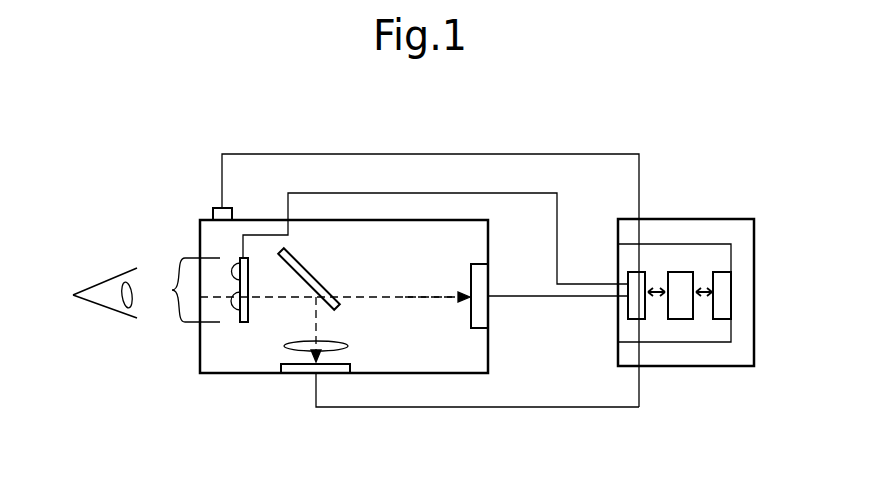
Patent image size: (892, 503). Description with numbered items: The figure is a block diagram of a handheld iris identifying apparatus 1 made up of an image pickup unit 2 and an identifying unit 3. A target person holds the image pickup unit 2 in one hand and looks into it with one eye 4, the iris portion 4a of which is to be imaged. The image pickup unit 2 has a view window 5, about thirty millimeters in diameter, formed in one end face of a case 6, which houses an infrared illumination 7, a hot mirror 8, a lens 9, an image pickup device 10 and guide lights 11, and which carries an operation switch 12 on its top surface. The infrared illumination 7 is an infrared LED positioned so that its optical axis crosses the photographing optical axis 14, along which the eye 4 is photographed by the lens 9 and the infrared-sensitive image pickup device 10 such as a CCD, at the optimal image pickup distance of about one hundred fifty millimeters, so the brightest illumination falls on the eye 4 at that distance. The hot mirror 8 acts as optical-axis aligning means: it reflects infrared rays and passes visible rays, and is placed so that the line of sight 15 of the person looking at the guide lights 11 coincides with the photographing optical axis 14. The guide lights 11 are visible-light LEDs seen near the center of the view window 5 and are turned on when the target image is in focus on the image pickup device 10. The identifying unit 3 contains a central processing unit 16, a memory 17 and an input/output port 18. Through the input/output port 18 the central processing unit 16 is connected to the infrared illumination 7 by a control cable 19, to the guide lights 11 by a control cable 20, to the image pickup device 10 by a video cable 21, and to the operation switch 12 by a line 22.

The iris identifying apparatus 1 is at (503, 148).
The image pickup unit 2 is at (258, 379).
The identifying unit 3 is at (702, 213).
The eye 4 is at (110, 279).
The iris 4a is at (133, 320).
The view window 5 is at (185, 290).
The case 6 is at (218, 375).
The infrared illumination 7 is at (237, 263).
The hot mirror 8 is at (302, 267).
The lens 9 is at (346, 344).
The image pickup device 10 is at (352, 364).
The guide lights 11 is at (475, 329).
The operation switch 12 is at (213, 208).
The photographing optical axis 14 is at (313, 318).
The line of sight 15 is at (428, 300).
The central processing unit 16 is at (680, 319).
The memory 17 is at (722, 319).
The input/output port 18 is at (628, 307).
The control cable 19 is at (555, 226).
The control cable 20 is at (537, 298).
The video cable 21 is at (565, 408).
The line 22 is at (593, 154).